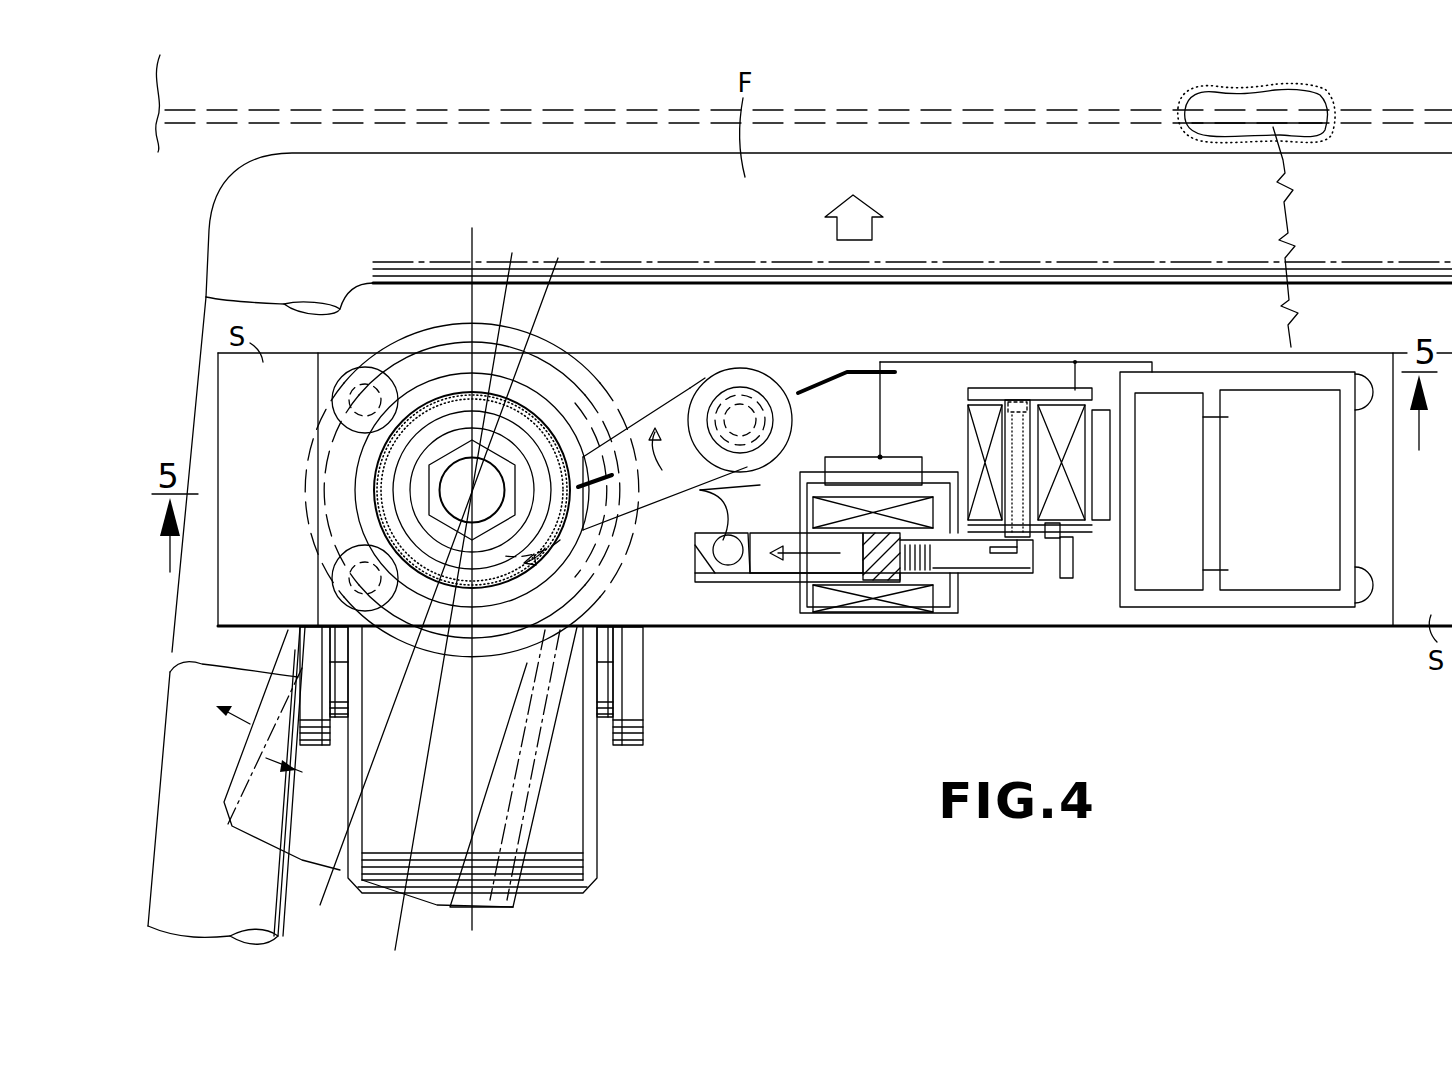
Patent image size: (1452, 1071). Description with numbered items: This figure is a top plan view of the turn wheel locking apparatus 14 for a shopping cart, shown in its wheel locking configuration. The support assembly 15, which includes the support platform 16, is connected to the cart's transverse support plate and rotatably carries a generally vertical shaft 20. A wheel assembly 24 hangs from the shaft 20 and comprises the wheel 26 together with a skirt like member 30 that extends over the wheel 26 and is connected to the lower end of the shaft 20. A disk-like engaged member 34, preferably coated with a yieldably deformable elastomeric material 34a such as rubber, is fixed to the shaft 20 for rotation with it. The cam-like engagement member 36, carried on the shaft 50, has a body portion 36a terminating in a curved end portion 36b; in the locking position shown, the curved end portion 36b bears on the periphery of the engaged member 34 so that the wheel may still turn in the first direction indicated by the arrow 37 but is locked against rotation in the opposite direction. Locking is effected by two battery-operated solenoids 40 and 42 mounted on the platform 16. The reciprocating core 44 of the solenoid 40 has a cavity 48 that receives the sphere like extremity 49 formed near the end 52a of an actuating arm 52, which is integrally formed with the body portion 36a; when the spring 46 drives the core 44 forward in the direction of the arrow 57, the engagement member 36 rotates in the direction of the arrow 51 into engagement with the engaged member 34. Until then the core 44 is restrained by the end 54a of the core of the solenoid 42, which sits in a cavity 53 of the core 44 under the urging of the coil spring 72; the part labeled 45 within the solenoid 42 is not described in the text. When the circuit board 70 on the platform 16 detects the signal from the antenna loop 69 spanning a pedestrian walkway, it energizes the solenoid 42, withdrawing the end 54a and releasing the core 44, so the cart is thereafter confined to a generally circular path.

The turn wheel locking apparatus 14 is at (1128, 336).
The support assembly 15 is at (778, 352).
The support platform 16 is at (1167, 612).
The shaft 20 is at (455, 483).
The wheel assembly 24 is at (652, 682).
The wheel 26 is at (590, 852).
The skirt like member 30 is at (643, 732).
The engaged member 34 is at (372, 462).
The yieldably deformable elastomeric material 34a is at (380, 532).
The engagement member 36 is at (692, 385).
The body portion 36a is at (677, 407).
The curved end portion 36b is at (585, 472).
The arrow 37 is at (548, 545).
The solenoid 40 is at (885, 623).
The solenoid 42 is at (972, 424).
The reciprocating core 44 is at (790, 583).
The plunger 45 is at (1007, 440).
The spring 46 is at (1040, 560).
The cavity 48 is at (712, 582).
The sphere like extremity 49 is at (732, 566).
The shaft 50 is at (740, 418).
The arrow 51 is at (736, 443).
The actuating arm 52 is at (752, 486).
The end 52a is at (723, 530).
The cavity 53 is at (973, 575).
The end 54a is at (1020, 575).
The arrow 57 is at (828, 580).
The antenna loop 69 is at (1215, 110).
The circuit board 70 is at (1318, 607).
The coil spring 72 is at (1020, 388).